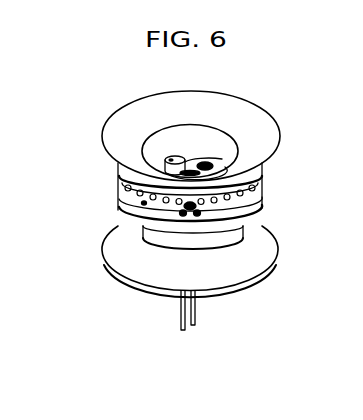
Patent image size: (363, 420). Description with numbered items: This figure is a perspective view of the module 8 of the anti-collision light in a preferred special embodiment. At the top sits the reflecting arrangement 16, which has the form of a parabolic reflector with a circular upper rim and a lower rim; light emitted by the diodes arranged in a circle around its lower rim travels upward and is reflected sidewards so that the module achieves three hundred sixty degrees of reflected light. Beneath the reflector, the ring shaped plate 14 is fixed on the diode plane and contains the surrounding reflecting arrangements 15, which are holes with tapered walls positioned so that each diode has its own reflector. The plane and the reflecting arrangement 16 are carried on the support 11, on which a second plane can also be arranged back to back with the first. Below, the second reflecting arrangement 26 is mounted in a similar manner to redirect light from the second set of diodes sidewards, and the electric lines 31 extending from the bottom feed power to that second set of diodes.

The module 8 is at (274, 101).
The reflecting arrangement 16 is at (127, 118).
The ring shaped plate 14 is at (120, 192).
The surrounding reflecting arrangements 15 is at (242, 192).
The support 11 is at (120, 210).
The reflecting arrangement 26 is at (123, 255).
The electric lines 31 is at (181, 317).